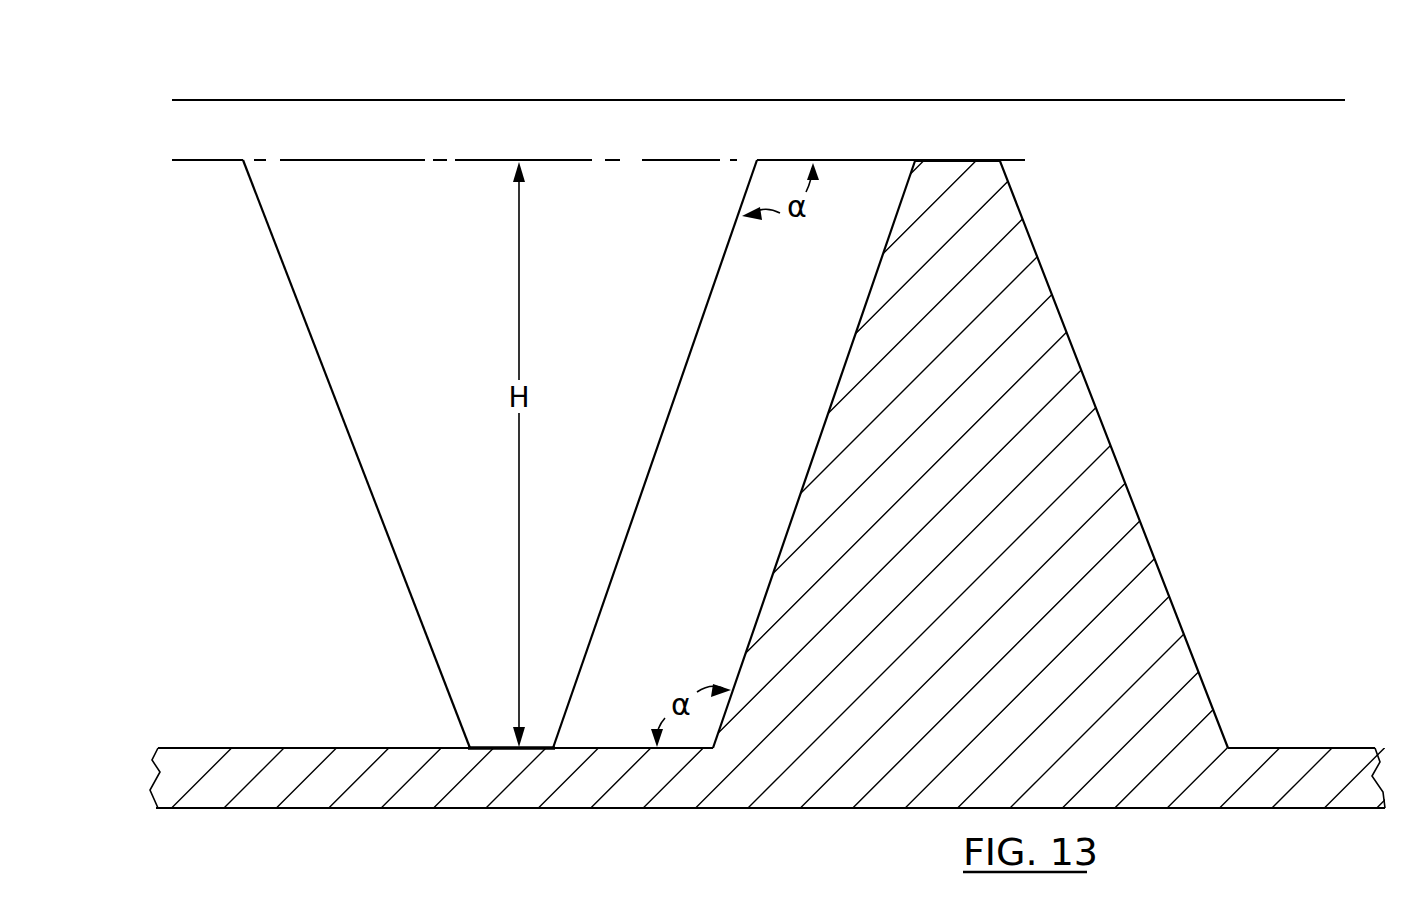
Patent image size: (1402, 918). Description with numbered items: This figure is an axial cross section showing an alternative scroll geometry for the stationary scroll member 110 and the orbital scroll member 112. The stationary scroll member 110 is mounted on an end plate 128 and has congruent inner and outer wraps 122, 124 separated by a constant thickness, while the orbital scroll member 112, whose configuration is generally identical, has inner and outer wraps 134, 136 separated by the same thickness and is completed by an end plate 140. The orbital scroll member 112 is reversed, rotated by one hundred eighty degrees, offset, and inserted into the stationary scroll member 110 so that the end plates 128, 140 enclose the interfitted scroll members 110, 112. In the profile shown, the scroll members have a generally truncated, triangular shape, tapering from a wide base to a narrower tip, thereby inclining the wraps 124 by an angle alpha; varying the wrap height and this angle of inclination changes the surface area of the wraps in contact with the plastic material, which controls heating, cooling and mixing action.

The stationary scroll member 110 is at (700, 88).
The orbital scroll member 112 is at (385, 828).
The inner wrap 122 is at (340, 408).
The outer wrap 124 is at (690, 358).
The end plate 128 is at (363, 130).
The inner wrap 134 is at (830, 412).
The outer wrap 136 is at (1078, 354).
The end plate 140 is at (590, 775).